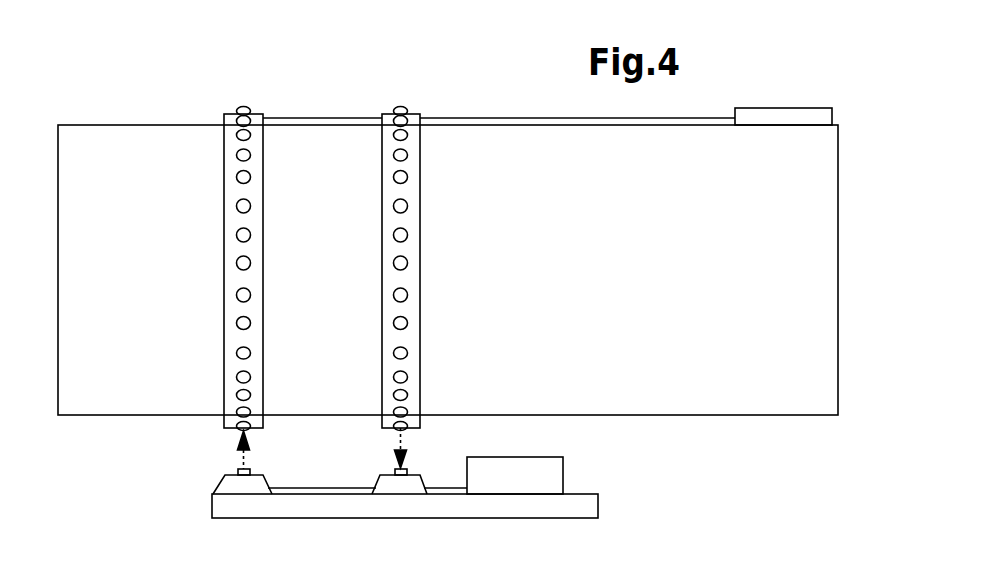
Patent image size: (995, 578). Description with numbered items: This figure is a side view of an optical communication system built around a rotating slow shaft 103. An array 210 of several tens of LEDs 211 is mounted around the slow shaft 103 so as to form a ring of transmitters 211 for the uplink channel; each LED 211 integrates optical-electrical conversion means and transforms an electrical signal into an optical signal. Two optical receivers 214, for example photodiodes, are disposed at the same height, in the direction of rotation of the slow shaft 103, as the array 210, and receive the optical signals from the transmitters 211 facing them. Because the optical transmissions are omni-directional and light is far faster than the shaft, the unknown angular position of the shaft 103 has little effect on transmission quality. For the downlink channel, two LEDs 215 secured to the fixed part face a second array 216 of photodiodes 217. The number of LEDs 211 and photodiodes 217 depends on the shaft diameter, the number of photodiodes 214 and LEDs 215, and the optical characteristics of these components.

The slow shaft 103 is at (773, 387).
The array of LEDs 210 is at (410, 145).
The LEDs 211 is at (412, 236).
The optical receivers 214 is at (408, 468).
The LEDs 215 is at (238, 470).
The second array of photodiodes 216 is at (233, 365).
The photodiodes 217 is at (237, 237).